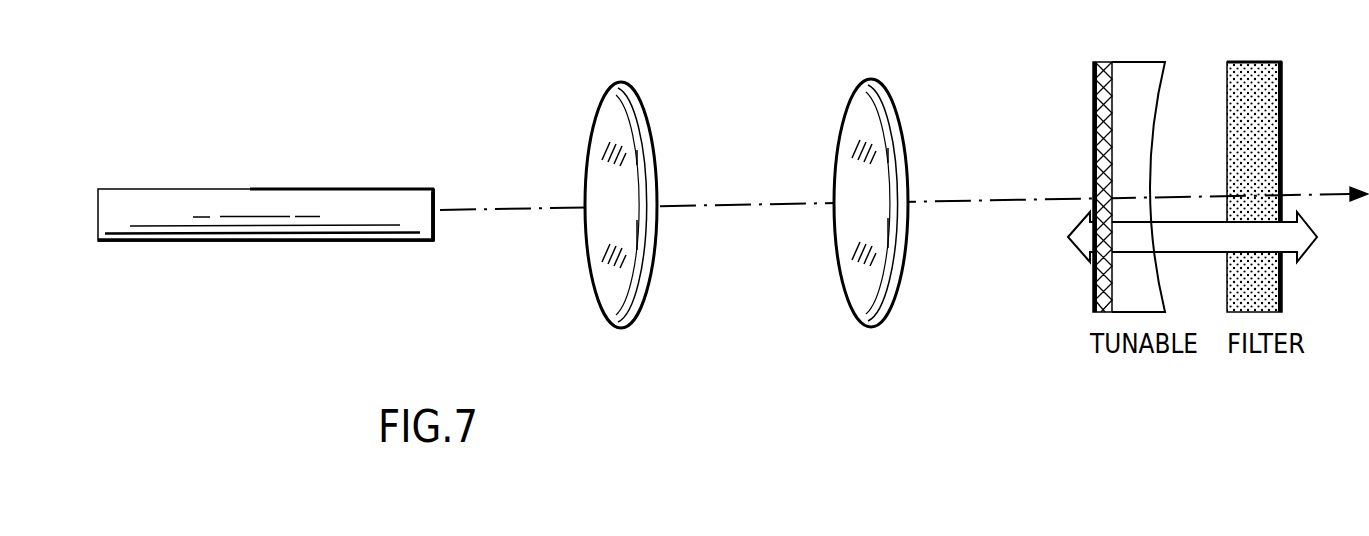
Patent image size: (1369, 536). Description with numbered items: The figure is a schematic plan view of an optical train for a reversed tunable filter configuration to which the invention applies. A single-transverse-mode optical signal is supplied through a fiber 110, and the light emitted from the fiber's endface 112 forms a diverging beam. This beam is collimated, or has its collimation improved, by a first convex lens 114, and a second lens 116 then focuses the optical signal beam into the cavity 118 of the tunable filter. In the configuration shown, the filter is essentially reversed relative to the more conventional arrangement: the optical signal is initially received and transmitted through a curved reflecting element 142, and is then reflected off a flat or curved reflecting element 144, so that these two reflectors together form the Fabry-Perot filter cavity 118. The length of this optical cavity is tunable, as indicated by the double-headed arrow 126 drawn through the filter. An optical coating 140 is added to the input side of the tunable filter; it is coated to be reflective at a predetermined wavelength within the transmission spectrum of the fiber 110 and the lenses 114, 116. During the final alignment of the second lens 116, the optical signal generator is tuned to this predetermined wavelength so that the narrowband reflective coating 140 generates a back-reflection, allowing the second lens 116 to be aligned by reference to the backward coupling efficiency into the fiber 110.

The fiber 110 is at (357, 188).
The fiber endface 112 is at (436, 221).
The first convex lens 114 is at (645, 112).
The second lens 116 is at (893, 108).
The cavity 118 is at (1188, 70).
The arrow 126 is at (1190, 252).
The optical coating 140 is at (1098, 62).
The curved reflecting element 142 is at (1127, 62).
The flat or curved reflecting element 144 is at (1258, 62).